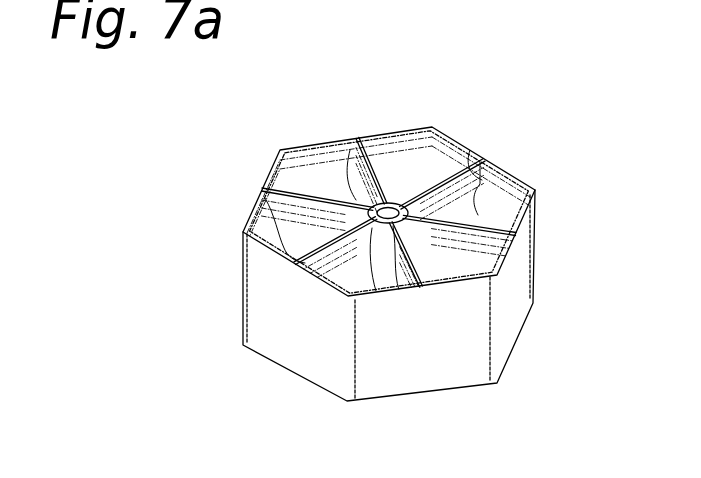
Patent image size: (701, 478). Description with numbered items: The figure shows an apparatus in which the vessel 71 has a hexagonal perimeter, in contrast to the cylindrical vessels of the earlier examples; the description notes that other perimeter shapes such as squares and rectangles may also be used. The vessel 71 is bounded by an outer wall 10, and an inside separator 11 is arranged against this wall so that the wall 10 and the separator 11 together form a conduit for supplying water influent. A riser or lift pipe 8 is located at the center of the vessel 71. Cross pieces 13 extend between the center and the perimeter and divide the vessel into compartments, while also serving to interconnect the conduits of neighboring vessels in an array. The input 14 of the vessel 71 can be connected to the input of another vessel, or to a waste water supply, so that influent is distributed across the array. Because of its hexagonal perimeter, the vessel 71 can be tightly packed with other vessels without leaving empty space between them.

The vessel 71 is at (253, 134).
The riser or lift pipe 8 is at (388, 210).
The inside separator 11 is at (490, 218).
The cross piece 13 is at (299, 197).
The input 14 is at (243, 259).
The outer wall 10 is at (283, 325).